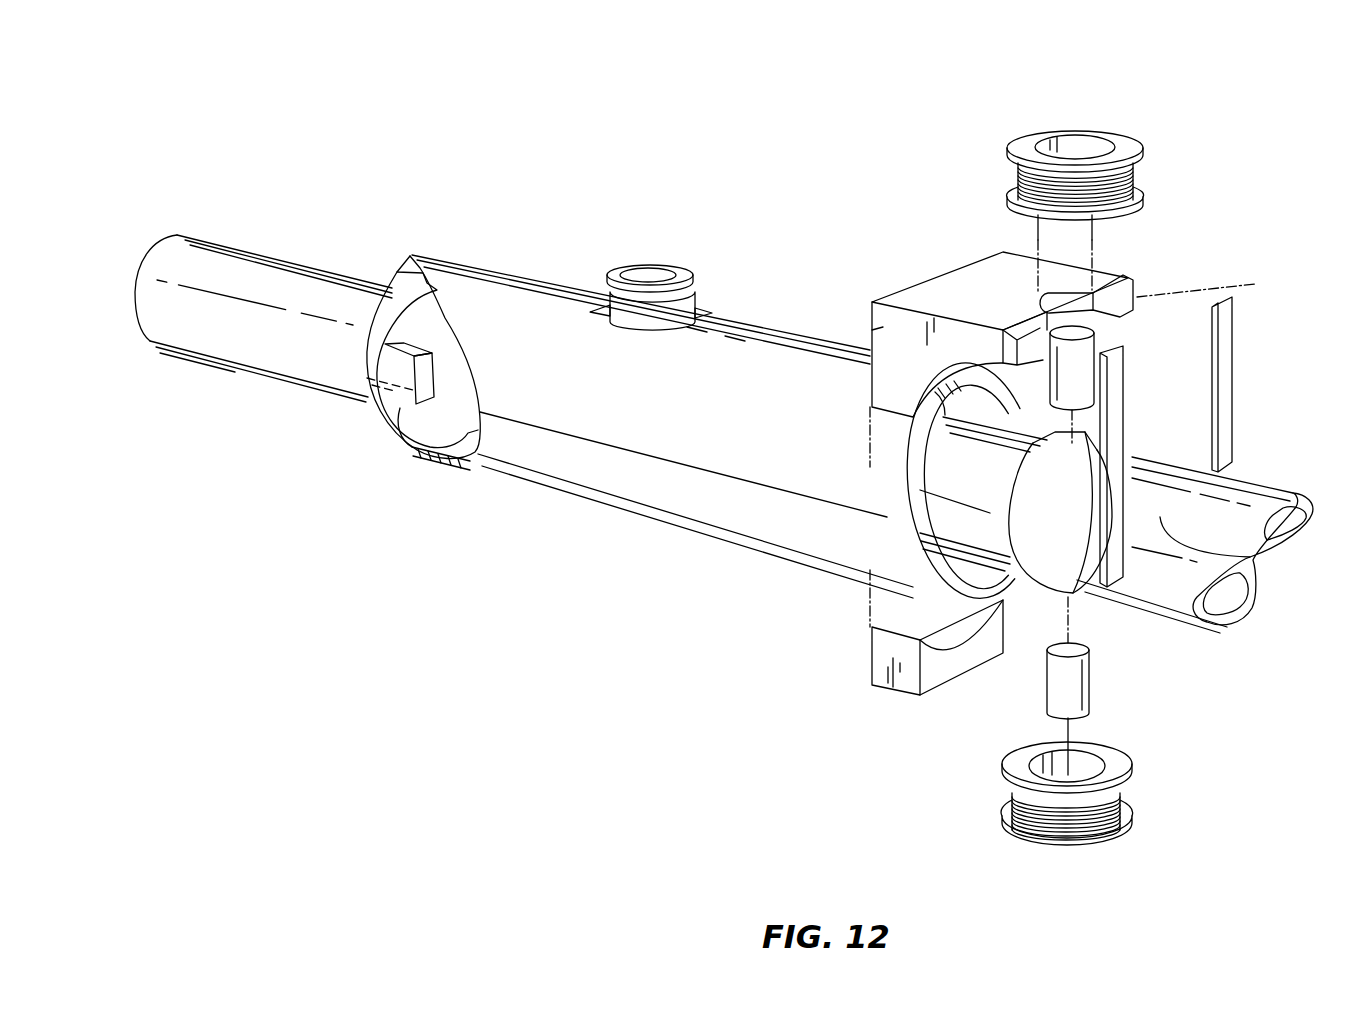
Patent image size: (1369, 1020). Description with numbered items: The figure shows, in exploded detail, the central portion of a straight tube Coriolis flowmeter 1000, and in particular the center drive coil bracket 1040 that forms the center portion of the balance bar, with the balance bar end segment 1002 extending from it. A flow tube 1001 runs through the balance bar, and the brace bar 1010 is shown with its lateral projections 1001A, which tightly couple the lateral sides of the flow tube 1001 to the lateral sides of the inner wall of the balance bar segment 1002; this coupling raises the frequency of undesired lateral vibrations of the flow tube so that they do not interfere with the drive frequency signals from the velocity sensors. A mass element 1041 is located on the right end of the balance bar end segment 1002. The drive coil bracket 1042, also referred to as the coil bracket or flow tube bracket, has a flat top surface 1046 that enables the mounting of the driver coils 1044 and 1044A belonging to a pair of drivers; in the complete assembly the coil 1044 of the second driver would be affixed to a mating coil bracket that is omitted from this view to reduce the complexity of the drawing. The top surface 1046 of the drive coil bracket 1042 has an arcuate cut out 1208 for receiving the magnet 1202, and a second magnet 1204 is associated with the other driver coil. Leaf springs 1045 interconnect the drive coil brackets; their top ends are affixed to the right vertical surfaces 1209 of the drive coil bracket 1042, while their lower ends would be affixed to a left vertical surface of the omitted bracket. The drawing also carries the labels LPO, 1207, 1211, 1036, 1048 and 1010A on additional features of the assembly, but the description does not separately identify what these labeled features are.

The Coriolis flowmeter 1000 is at (700, 122).
The light port opening LPO is at (641, 262).
The center drive coil bracket 1040 is at (1109, 171).
The driver coil 1044 is at (1137, 178).
The coil 1044A is at (1120, 810).
The drive coil bracket 1042 is at (962, 222).
The flat top surface 1046 is at (947, 287).
The mass element 1041 is at (877, 657).
The block face 1207 is at (883, 327).
The arcuate cut out 1208 is at (1073, 296).
The right vertical surfaces 1209 is at (955, 362).
The magnet 1202 is at (1080, 384).
The magnet 1204 is at (1080, 683).
The leaf springs 1045 is at (1120, 418).
The ring slot 1211 is at (935, 390).
The clamp ring 1036 is at (887, 533).
The collar 1048 is at (1007, 578).
The proximal tube 1010A is at (245, 335).
The brace bar 1010 is at (378, 388).
The lateral projections 1001A is at (400, 408).
The balance bar end segment 1002 is at (605, 455).
The flow tube 1001 is at (1250, 556).